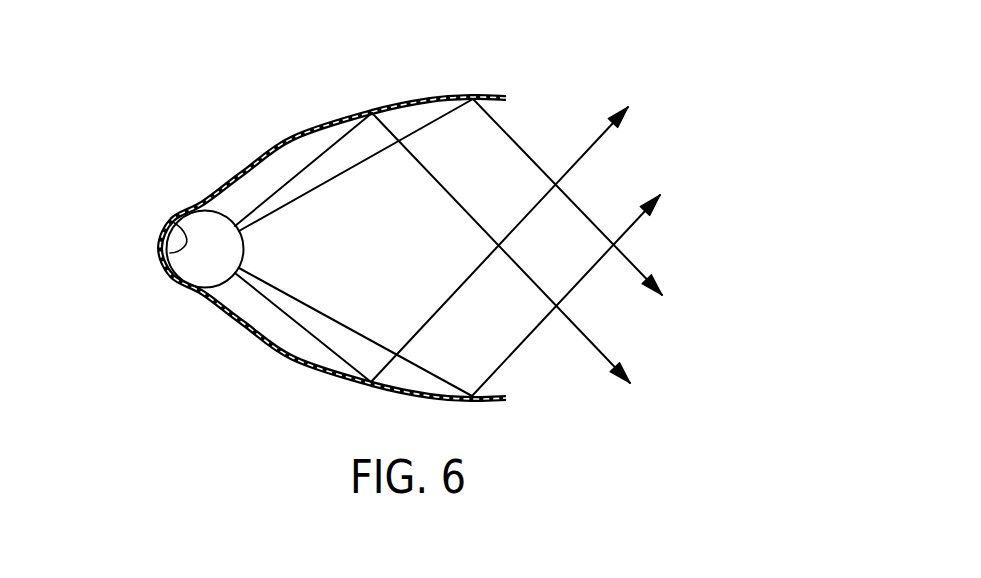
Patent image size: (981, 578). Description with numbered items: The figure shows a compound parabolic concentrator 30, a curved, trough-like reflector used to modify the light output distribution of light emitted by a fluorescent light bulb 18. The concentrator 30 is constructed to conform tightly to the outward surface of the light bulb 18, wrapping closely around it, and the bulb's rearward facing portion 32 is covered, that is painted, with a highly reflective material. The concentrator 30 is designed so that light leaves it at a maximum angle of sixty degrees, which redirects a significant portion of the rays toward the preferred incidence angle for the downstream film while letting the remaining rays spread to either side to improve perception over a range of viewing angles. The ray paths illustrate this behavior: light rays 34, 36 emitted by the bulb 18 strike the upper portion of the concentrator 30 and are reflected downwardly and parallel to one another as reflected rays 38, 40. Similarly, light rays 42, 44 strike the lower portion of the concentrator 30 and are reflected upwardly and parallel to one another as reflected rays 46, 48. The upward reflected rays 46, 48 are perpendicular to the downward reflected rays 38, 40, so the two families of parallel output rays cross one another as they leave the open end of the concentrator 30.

The fluorescent light bulb 18 is at (243, 251).
The compound parabolic concentrator 30 is at (236, 176).
The rearward facing portion 32 is at (173, 222).
The light ray 34 is at (307, 162).
The light ray 36 is at (433, 122).
The reflected ray 38 is at (433, 173).
The reflected ray 40 is at (508, 132).
The light ray 42 is at (290, 322).
The light ray 44 is at (417, 367).
The reflected ray 46 is at (447, 306).
The reflected ray 48 is at (510, 358).